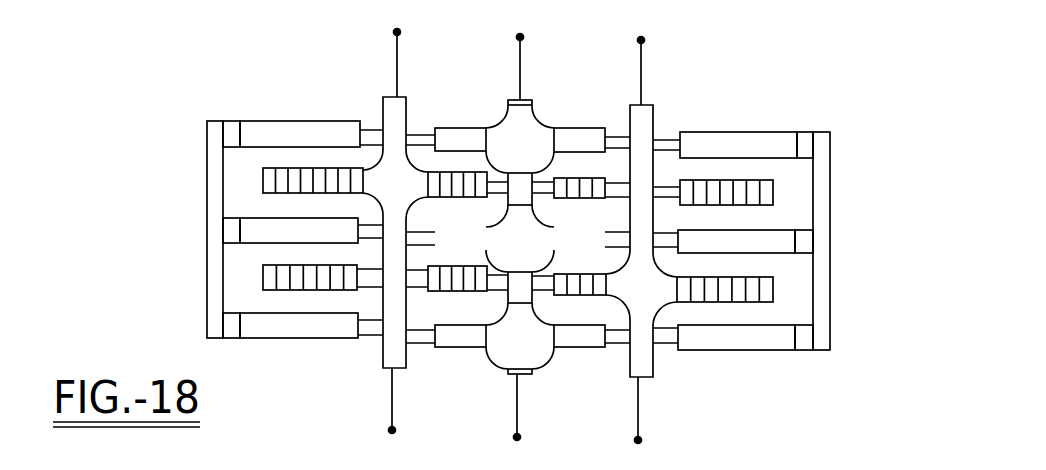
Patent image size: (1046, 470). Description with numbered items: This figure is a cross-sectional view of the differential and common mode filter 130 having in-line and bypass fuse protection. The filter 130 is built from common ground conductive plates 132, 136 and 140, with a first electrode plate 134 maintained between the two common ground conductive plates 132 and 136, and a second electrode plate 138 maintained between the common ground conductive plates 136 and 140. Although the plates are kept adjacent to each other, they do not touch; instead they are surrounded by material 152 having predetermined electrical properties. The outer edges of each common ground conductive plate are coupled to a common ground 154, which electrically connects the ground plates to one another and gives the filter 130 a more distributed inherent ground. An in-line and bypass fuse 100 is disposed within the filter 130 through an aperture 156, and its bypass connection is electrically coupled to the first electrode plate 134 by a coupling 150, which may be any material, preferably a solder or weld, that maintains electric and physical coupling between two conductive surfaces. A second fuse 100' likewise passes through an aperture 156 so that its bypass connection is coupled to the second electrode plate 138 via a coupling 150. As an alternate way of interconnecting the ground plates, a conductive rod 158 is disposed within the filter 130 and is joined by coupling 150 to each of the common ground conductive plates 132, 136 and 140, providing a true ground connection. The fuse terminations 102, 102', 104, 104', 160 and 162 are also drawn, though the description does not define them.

The differential and common mode filter 130 is at (207, 98).
The in-line and bypass fuse 100 is at (358, 214).
The fuse 100' is at (682, 220).
The first terminal lead 102 is at (363, 53).
The second terminal lead 102' is at (688, 62).
The first terminal lead (bottom) 104 is at (351, 403).
The second terminal lead (bottom) 104' is at (684, 411).
The common ground conductive plate 132 is at (270, 127).
The first electrode plate 134 is at (773, 195).
The common ground conductive plate 136 is at (246, 216).
The second electrode plate 138 is at (263, 277).
The common ground conductive plate 140 is at (288, 340).
The coupling 150 is at (412, 197).
The material 152 is at (793, 312).
The common ground 154 is at (205, 158).
The aperture 156 is at (367, 337).
The conductive rod 158 is at (525, 183).
The center terminal lead (top) 160 is at (522, 50).
The center terminal lead (bottom) 162 is at (517, 425).